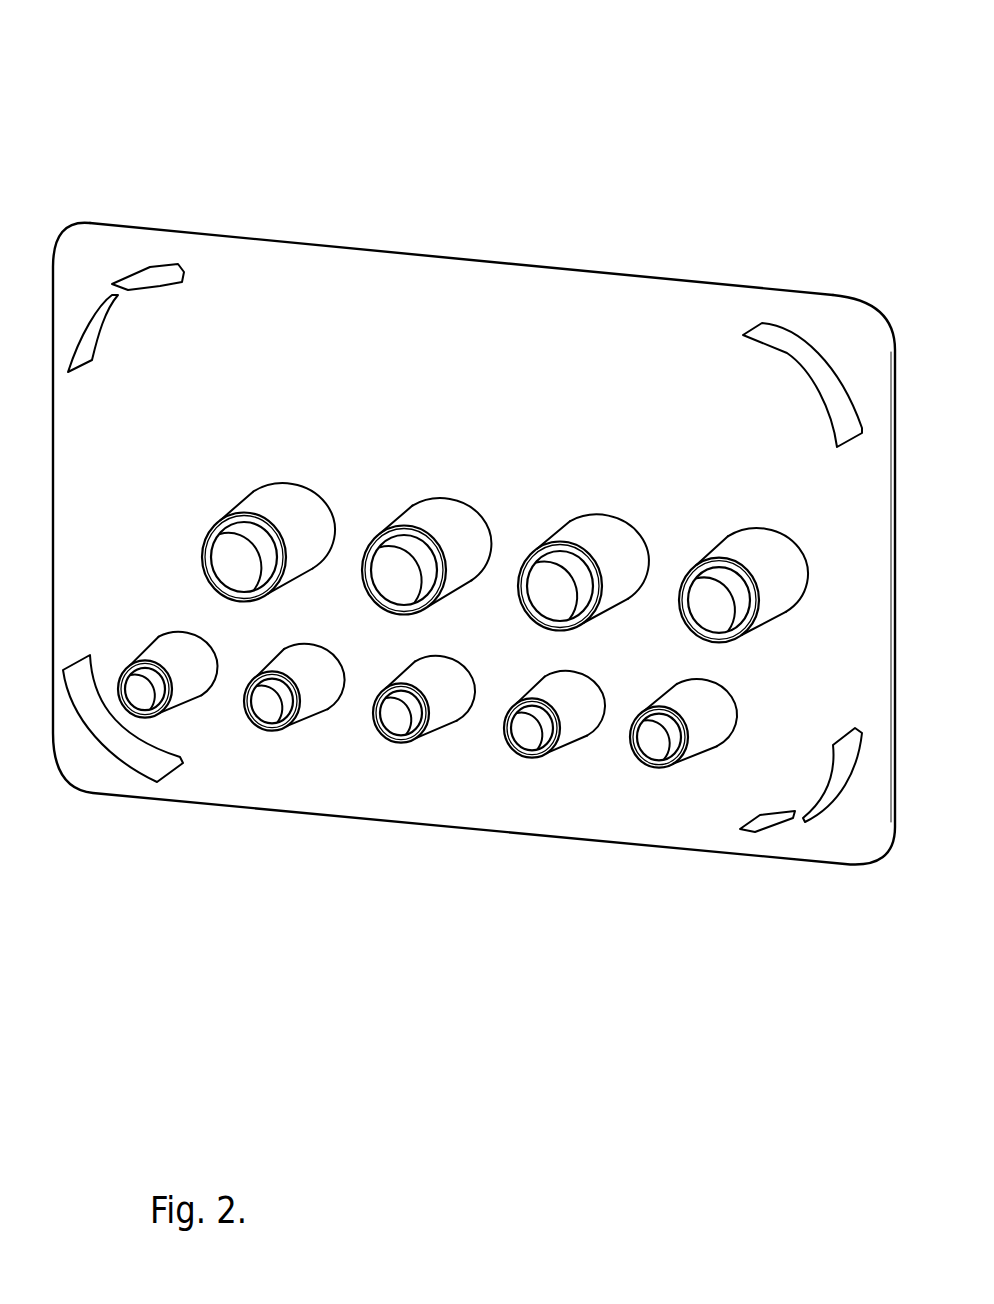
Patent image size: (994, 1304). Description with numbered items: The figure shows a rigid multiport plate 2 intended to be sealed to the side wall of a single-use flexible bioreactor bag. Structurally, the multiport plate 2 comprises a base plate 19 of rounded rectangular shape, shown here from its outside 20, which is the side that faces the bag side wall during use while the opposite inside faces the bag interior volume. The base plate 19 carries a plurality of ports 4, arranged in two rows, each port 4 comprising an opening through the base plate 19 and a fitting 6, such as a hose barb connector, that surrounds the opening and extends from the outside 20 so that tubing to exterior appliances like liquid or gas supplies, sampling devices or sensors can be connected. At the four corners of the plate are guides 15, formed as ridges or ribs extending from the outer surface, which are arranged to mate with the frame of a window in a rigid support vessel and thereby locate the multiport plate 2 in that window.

The multiport plate 2 is at (392, 130).
The outside 20 is at (288, 340).
The base plate 19 is at (452, 250).
The ports 4 is at (692, 210).
The fittings 6 is at (505, 740).
The guides 15 is at (118, 280).